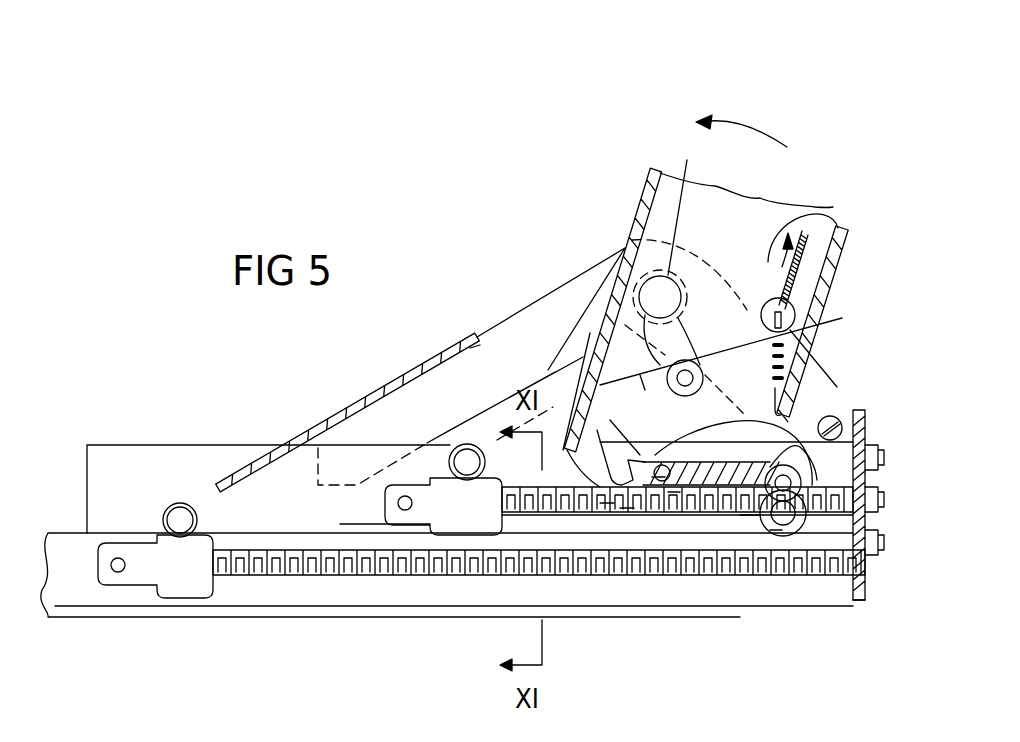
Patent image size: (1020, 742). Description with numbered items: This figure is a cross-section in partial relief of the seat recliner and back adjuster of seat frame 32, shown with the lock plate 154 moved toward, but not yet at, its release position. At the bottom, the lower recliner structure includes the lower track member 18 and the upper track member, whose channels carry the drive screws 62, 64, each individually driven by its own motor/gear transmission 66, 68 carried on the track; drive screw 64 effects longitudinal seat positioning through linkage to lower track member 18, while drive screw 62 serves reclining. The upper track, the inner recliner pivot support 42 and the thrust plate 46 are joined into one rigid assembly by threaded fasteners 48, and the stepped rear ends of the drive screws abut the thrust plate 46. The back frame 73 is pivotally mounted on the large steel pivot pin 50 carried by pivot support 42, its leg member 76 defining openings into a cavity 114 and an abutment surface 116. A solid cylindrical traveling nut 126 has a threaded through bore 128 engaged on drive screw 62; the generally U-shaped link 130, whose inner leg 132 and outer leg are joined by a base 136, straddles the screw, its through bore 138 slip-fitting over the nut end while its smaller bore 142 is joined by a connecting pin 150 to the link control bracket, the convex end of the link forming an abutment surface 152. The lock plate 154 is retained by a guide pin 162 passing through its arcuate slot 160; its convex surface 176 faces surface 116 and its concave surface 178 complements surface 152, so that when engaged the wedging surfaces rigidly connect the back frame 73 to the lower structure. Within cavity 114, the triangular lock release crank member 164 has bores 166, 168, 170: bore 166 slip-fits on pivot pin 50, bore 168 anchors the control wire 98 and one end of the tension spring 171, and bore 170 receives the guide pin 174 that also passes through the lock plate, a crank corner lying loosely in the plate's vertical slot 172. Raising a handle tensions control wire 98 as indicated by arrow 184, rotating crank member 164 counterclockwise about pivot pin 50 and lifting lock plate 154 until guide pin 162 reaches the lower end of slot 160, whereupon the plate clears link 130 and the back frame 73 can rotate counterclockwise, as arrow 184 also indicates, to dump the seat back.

The lower track member 18 is at (68, 590).
The seat frame 32 is at (491, 236).
The inner recliner pivot support 42 is at (552, 298).
The thrust plate 46 is at (857, 580).
The threaded fastener 48 is at (880, 452).
The pivot pin 50 is at (652, 290).
The drive screw 62 is at (627, 508).
The drive screw 64 is at (287, 567).
The motor/gear transmission 66 is at (458, 525).
The motor/gear transmission 68 is at (175, 582).
The back frame 73 is at (857, 250).
The leg member 76 is at (637, 202).
The control wire 98 is at (835, 222).
The cavity 114 is at (803, 333).
The abutment surface 116 is at (615, 412).
The traveling nut 126 is at (808, 505).
The threaded through bore 128 is at (827, 510).
The link 130 is at (750, 517).
The inner leg 132 is at (775, 530).
The base 136 is at (793, 420).
The through bore 138 is at (800, 447).
The bore 142 is at (673, 495).
The connecting pin 150 is at (658, 477).
The abutment surface 152 is at (607, 503).
The lock plate 154 is at (640, 375).
The arcuate slot 160 is at (640, 400).
The guide pin 162 is at (470, 350).
The lock release crank member 164 is at (735, 232).
The through bore 166 is at (683, 193).
The through bore 168 is at (833, 293).
The through bore 170 is at (690, 363).
The tension spring 171 is at (797, 350).
The vertical slot 172 is at (672, 410).
The guide pin 174 is at (685, 362).
The abutment surface 176 is at (570, 448).
The abutment surface 178 is at (503, 497).
The arrow 184 is at (793, 208).